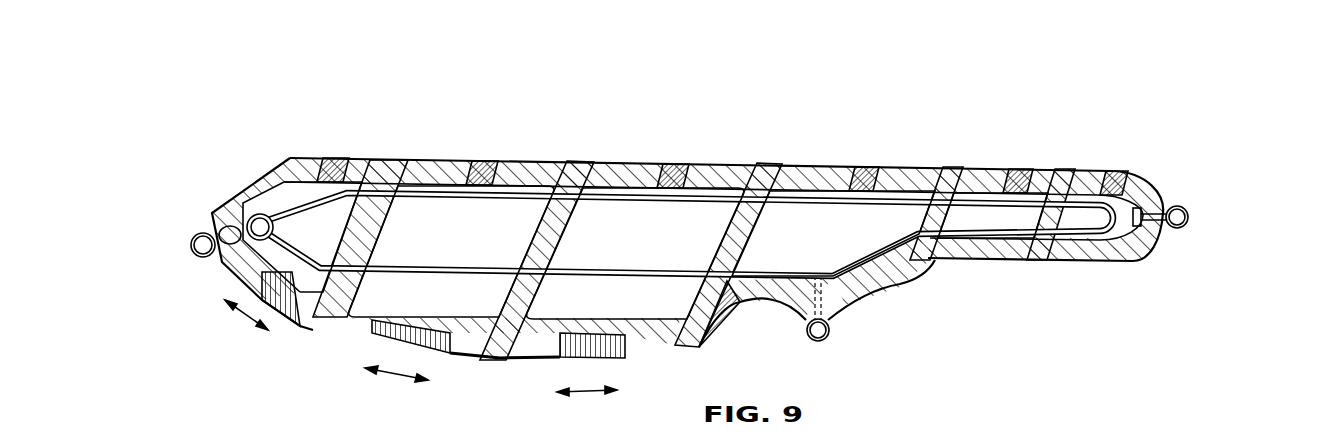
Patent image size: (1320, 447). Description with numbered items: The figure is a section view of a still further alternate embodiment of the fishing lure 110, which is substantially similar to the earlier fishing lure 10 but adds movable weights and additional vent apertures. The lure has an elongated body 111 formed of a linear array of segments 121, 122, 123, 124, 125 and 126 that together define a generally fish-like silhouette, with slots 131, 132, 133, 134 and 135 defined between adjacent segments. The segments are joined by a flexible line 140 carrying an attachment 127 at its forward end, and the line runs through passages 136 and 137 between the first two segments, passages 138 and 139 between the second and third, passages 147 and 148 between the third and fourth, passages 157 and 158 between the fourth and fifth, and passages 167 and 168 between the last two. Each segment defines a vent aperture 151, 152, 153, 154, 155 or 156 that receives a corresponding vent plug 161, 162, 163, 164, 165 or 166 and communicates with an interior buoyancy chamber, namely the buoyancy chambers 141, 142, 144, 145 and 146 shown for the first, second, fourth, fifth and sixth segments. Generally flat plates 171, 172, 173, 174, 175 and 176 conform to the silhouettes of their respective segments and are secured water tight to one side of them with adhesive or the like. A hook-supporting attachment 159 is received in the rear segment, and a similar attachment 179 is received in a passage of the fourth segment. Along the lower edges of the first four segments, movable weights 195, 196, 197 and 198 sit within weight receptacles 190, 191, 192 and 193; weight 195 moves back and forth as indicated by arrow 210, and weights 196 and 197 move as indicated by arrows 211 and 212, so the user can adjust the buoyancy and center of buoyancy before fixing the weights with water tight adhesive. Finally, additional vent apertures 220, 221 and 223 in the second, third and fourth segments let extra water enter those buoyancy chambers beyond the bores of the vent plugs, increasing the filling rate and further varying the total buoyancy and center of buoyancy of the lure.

The fishing lure 10 is at (572, 375).
The fishing lure 110 is at (912, 340).
The elongated body 111 is at (632, 152).
The segment 121 is at (241, 192).
The segment 122 is at (404, 162).
The segment 123 is at (613, 162).
The segment 124 is at (818, 166).
The segment 125 is at (997, 169).
The segment 126 is at (1165, 173).
The attachment 127 is at (193, 236).
The slot 131 is at (404, 160).
The slot 132 is at (597, 162).
The slot 133 is at (785, 165).
The slot 134 is at (970, 168).
The slot 135 is at (1097, 170).
The passage 136 is at (350, 194).
The passage 137 is at (376, 282).
The passage 138 is at (513, 240).
The passage 139 is at (500, 279).
The flexible line 140 is at (604, 278).
The interior buoyancy chamber 141 is at (274, 168).
The interior buoyancy chamber 142 is at (528, 162).
The buoyancy chamber 144 is at (888, 264).
The buoyancy chamber 145 is at (1020, 220).
The buoyancy chamber 146 is at (1140, 254).
The passage 147 is at (737, 205).
The passage 148 is at (697, 278).
The vent aperture 151 is at (304, 158).
The vent aperture 152 is at (470, 162).
The vent aperture 153 is at (683, 164).
The vent aperture 154 is at (853, 166).
The vent aperture 155 is at (1017, 169).
The vent aperture 156 is at (1173, 165).
The passage 157 is at (910, 167).
The passage 158 is at (907, 262).
The attachment 159 is at (1192, 232).
The vent plug 161 is at (338, 158).
The vent plug 162 is at (499, 162).
The vent plug 163 is at (567, 365).
The vent plug 164 is at (882, 167).
The vent plug 165 is at (1020, 172).
The vent plug 166 is at (1107, 170).
The passage 167 is at (1112, 170).
The passage 168 is at (1030, 245).
The flat plate 171 is at (330, 242).
The flat plate 172 is at (477, 258).
The flat plate 173 is at (693, 258).
The flat plate 174 is at (823, 252).
The flat plate 175 is at (1000, 226).
The flat plate 176 is at (1133, 261).
The attachment 179 is at (831, 338).
The weight receptacle 190 is at (294, 320).
The weight receptacle 191 is at (338, 327).
The weight receptacle 192 is at (527, 362).
The weight receptacle 193 is at (697, 347).
The movable weight 195 is at (240, 294).
The movable weight 196 is at (340, 328).
The movable weight 197 is at (567, 355).
The movable weight 198 is at (733, 300).
The arrow 210 is at (242, 318).
The arrows 211 is at (425, 380).
The arrows 212 is at (585, 396).
The vent aperture 220 is at (378, 244).
The vent aperture 221 is at (563, 232).
The vent aperture 223 is at (747, 238).